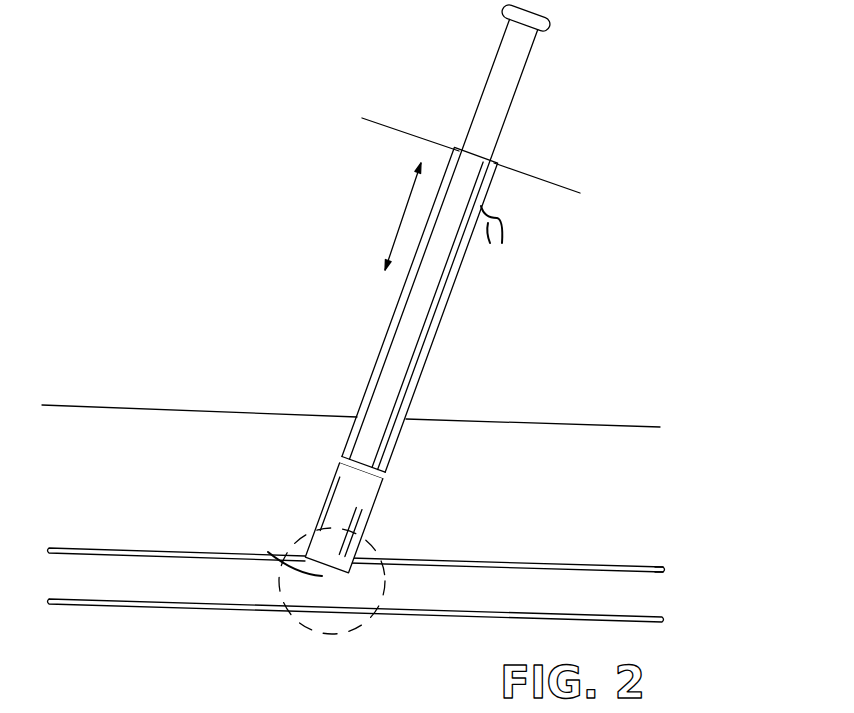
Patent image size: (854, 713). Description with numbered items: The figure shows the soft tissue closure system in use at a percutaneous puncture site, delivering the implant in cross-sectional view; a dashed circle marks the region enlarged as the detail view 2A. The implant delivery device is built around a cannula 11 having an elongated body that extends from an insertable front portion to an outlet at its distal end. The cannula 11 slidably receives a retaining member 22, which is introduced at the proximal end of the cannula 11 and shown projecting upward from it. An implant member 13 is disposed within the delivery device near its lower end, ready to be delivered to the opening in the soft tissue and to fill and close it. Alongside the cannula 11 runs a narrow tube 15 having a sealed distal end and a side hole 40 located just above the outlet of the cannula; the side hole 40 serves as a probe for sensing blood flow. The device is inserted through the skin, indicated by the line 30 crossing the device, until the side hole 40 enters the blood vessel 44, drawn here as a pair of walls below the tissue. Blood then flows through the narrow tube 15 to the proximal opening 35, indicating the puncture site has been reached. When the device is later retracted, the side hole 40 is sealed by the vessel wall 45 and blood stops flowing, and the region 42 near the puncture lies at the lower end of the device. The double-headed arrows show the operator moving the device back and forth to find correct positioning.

The cannula 11 is at (396, 306).
The implant member 13 is at (345, 500).
The narrow tube 15 is at (446, 312).
The retaining member 22 is at (522, 86).
The floor line 30 is at (544, 184).
The proximal opening 35 is at (484, 216).
The side hole 40 is at (497, 470).
The foot pad 42 is at (268, 552).
The blood vessel 44 is at (618, 588).
The vessel wall 45 is at (655, 565).
The detail circle 2A is at (332, 590).